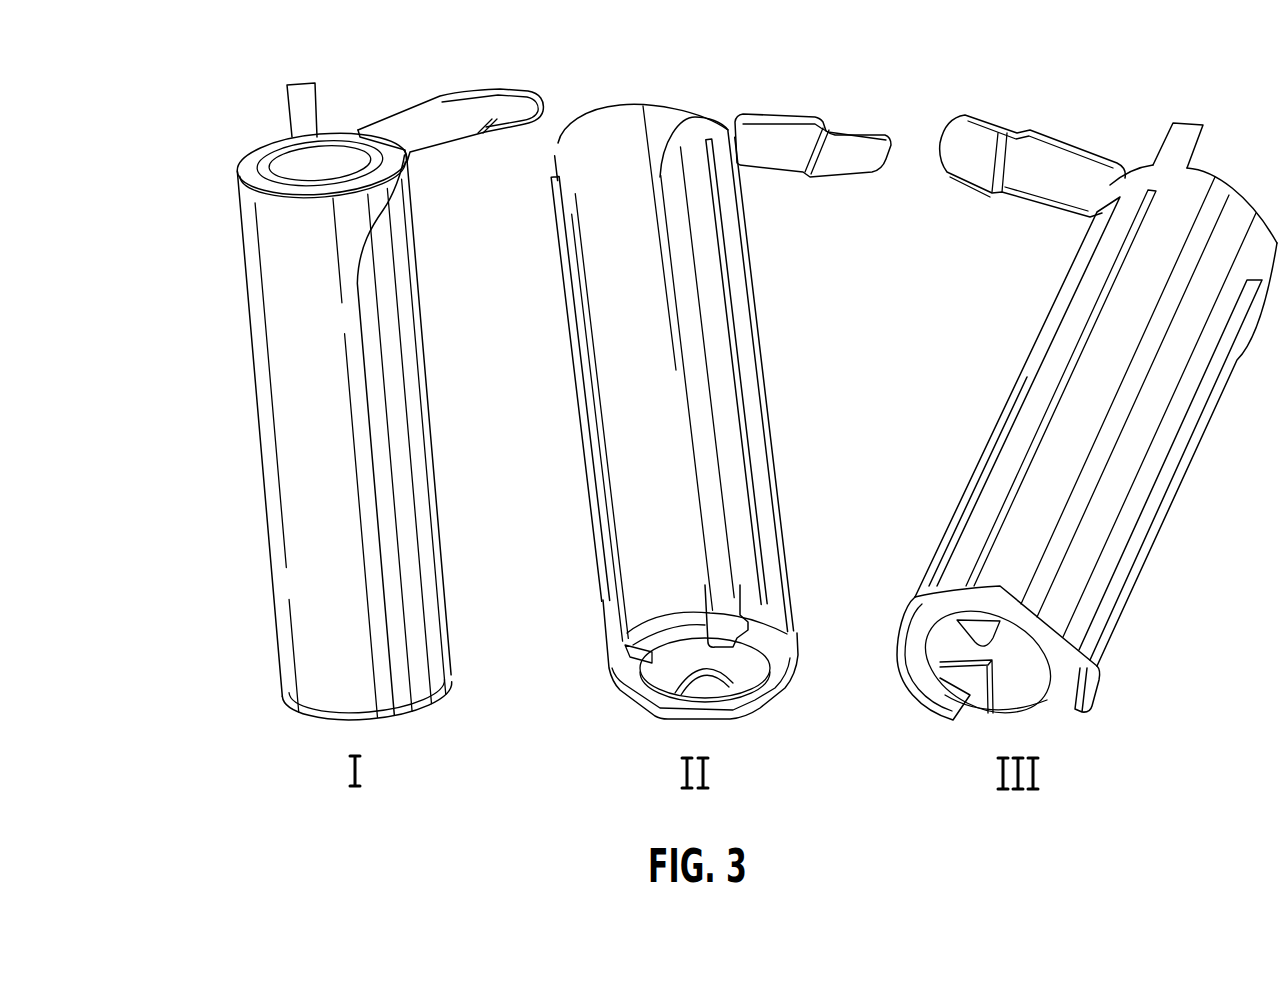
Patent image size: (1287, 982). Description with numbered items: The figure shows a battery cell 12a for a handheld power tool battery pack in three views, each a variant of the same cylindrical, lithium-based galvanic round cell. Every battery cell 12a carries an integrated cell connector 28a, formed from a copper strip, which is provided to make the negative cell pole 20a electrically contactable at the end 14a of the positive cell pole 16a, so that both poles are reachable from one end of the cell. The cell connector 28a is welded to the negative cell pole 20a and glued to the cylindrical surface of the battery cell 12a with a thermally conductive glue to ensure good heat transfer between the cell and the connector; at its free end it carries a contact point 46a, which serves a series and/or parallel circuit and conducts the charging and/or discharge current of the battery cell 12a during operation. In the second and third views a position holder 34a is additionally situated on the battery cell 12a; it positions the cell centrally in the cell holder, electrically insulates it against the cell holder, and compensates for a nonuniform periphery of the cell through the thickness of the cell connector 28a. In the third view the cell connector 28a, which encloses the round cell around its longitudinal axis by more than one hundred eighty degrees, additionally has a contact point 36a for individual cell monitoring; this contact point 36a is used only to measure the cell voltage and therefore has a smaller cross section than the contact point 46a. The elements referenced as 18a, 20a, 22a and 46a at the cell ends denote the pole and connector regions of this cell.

The battery cell 12a is at (305, 418).
The end 14a is at (297, 162).
The positive cell pole 16a is at (319, 163).
The second cell pole 18a is at (323, 720).
The negative cell pole 20a is at (368, 702).
The cell connector 22a is at (505, 107).
The contact point 46a is at (450, 125).
The cell connector 28a is at (398, 403).
The position holder 34a is at (740, 318).
The contact point 36a is at (1183, 138).